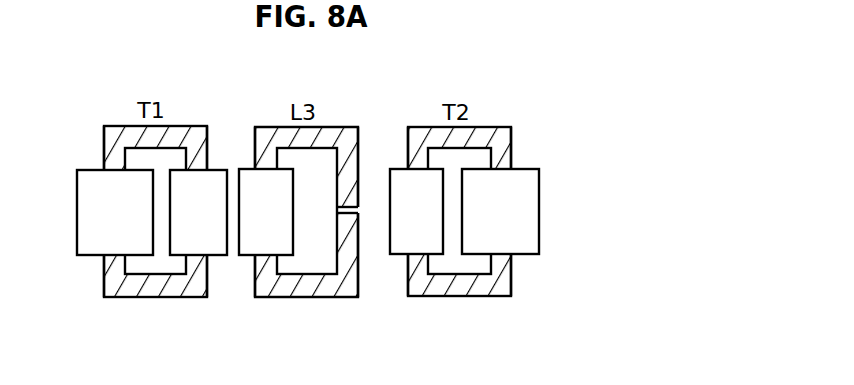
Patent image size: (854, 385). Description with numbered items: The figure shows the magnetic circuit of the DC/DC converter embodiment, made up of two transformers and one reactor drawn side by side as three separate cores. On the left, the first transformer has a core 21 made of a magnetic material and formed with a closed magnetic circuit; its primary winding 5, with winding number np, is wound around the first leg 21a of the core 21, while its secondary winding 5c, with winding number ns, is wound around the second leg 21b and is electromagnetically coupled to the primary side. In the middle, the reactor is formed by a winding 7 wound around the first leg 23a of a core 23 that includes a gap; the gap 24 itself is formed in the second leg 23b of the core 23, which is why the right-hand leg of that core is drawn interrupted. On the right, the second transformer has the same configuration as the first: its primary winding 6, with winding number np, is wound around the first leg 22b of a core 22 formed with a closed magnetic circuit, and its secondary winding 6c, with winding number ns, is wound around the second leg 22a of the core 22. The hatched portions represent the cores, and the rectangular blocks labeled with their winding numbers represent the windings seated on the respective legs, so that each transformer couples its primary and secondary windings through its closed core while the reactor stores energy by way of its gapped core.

The primary winding 5 is at (88, 257).
The secondary winding 5c is at (215, 257).
The primary winding 6 is at (542, 217).
The secondary winding 6c is at (398, 257).
The winding 7 is at (296, 218).
The core 21 is at (138, 226).
The first leg 21a is at (104, 158).
The second leg 21b is at (208, 158).
The core 22 is at (464, 216).
The second leg 22a is at (408, 160).
The first leg 22b is at (512, 158).
The core 23 is at (312, 215).
The first leg 23a is at (255, 167).
The second leg 23b is at (360, 158).
The gap 24 is at (359, 213).